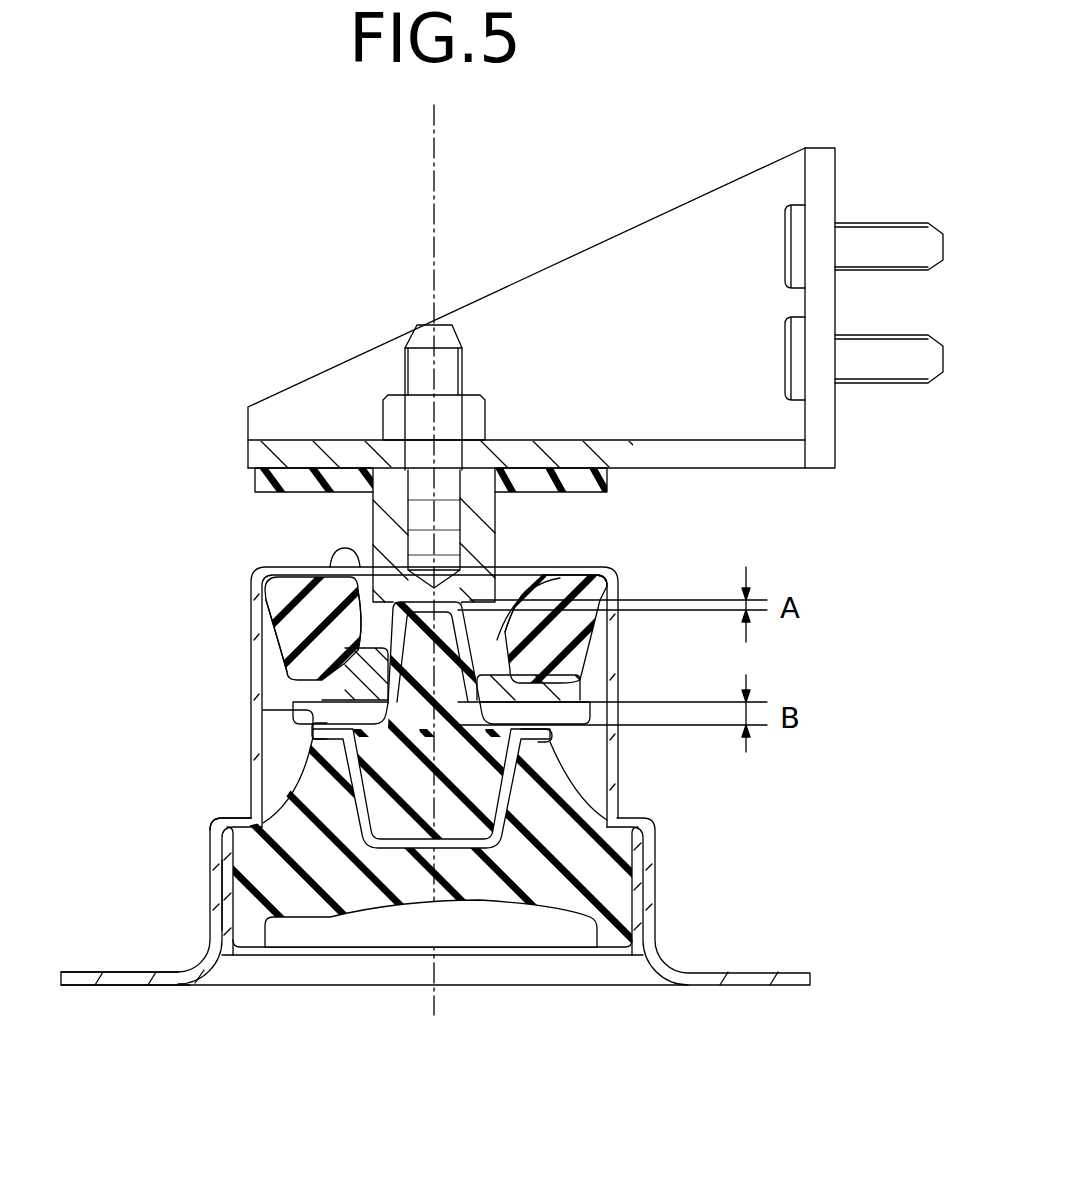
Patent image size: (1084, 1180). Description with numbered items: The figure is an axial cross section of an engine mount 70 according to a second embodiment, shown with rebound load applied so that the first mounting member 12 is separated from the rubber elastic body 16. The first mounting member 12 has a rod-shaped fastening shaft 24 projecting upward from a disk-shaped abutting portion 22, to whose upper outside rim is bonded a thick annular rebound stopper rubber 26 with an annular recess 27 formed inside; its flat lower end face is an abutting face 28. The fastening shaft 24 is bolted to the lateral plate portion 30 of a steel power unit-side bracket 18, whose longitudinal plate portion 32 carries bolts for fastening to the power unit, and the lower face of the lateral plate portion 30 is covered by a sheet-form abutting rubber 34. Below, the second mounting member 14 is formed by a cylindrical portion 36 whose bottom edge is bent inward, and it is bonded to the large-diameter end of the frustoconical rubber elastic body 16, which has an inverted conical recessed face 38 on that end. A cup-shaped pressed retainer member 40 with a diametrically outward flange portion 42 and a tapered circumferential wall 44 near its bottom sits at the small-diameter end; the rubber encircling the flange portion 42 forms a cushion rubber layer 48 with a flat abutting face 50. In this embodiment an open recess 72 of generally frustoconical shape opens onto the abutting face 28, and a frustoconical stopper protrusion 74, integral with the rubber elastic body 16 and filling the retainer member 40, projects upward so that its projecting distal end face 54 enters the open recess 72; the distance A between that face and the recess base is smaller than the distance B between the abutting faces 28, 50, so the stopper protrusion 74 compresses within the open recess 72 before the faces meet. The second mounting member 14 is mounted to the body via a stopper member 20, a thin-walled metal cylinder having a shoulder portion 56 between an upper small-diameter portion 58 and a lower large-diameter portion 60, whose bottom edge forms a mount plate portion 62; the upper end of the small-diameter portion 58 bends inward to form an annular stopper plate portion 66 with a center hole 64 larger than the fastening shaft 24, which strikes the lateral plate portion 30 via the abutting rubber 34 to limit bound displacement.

The first mounting member 12 is at (500, 521).
The second mounting member 14 is at (650, 868).
The rubber elastic body 16 is at (480, 907).
The power unit-side bracket 18 is at (595, 338).
The stopper member 20 is at (232, 660).
The abutting portion 22 is at (545, 678).
The fastening shaft 24 is at (386, 516).
The rebound stopper rubber 26 is at (590, 622).
The annular recess 27 is at (350, 552).
The abutting face 28 is at (290, 708).
The lateral plate portion 30 is at (771, 455).
The longitudinal plate portion 32 is at (812, 447).
The abutting rubber 34 is at (262, 480).
The cylindrical portion 36 is at (228, 873).
The inverted conical recessed face 38 is at (356, 920).
The retainer member 40 is at (525, 815).
The flange portion 42 is at (316, 755).
The tapered circumferential wall 44 is at (505, 843).
The cushion rubber layer 48 is at (312, 731).
The abutting face 50 is at (263, 710).
The projecting distal end face 54 is at (470, 585).
The shoulder portion 56 is at (236, 818).
The small-diameter portion 58 is at (257, 608).
The large-diameter portion 60 is at (216, 918).
The mount plate portion 62 is at (86, 972).
The center hole 64 is at (336, 556).
The stopper plate portion 66 is at (572, 575).
The engine mount 70 is at (180, 540).
The open recess 72 is at (288, 655).
The stopper protrusion 74 is at (562, 662).